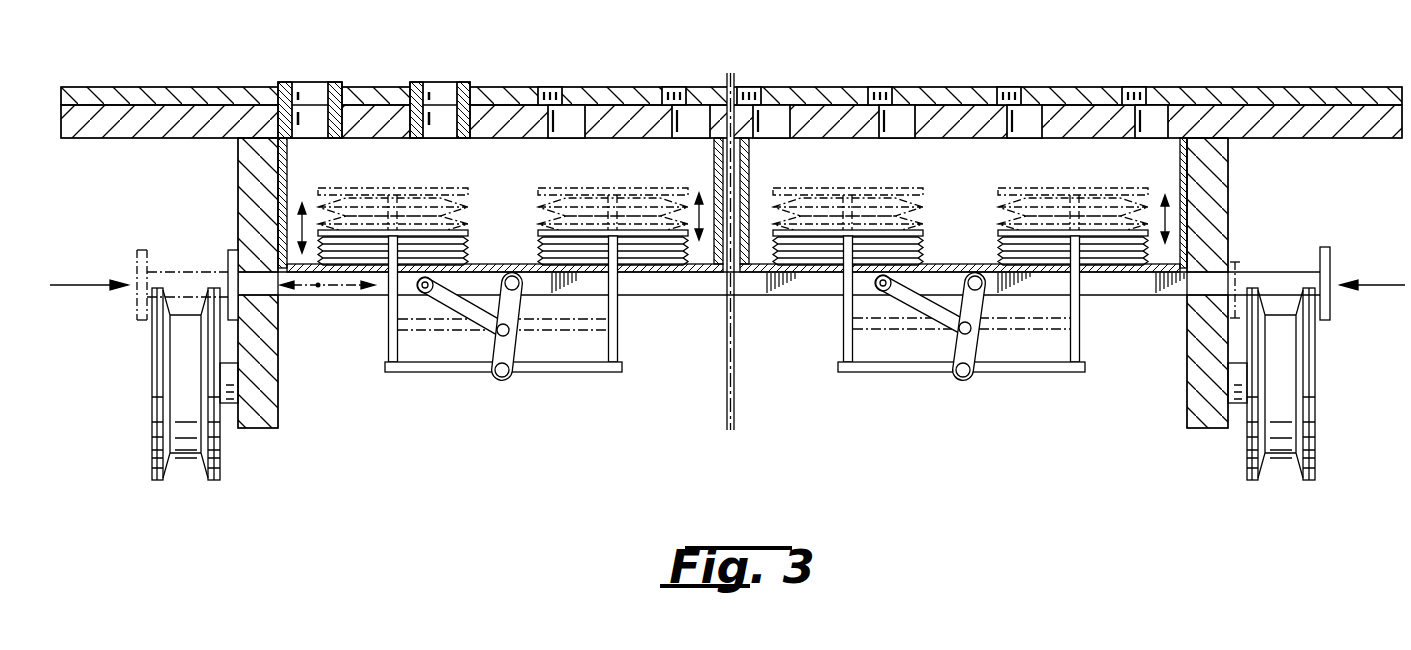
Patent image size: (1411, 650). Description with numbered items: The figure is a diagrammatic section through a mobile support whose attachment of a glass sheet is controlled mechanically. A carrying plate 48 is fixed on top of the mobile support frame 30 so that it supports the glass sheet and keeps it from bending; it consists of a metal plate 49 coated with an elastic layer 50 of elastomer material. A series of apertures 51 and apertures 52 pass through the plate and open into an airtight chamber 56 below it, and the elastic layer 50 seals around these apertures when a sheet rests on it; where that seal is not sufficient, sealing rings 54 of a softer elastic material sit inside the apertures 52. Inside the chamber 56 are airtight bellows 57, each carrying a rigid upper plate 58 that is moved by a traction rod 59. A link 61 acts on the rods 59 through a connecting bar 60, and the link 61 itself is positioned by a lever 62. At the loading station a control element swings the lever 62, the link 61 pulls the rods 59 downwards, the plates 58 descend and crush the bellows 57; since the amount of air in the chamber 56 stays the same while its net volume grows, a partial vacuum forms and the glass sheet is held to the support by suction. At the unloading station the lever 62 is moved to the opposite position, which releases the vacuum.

The mobile support frame 30 is at (278, 418).
The carrying plate 48 is at (731, 99).
The metal plate 49 is at (1316, 128).
The elastic layer 50 is at (1293, 96).
The aperture 51 is at (556, 117).
The aperture 52 is at (461, 88).
The sealing ring 54 is at (334, 82).
The airtight chamber 56 is at (697, 262).
The airtight bellows 57 is at (460, 252).
The rigid upper plate 58 is at (362, 236).
The traction rod 59 is at (388, 337).
The connecting bar 60 is at (447, 372).
The link 61 is at (515, 355).
The lever 62 is at (228, 252).